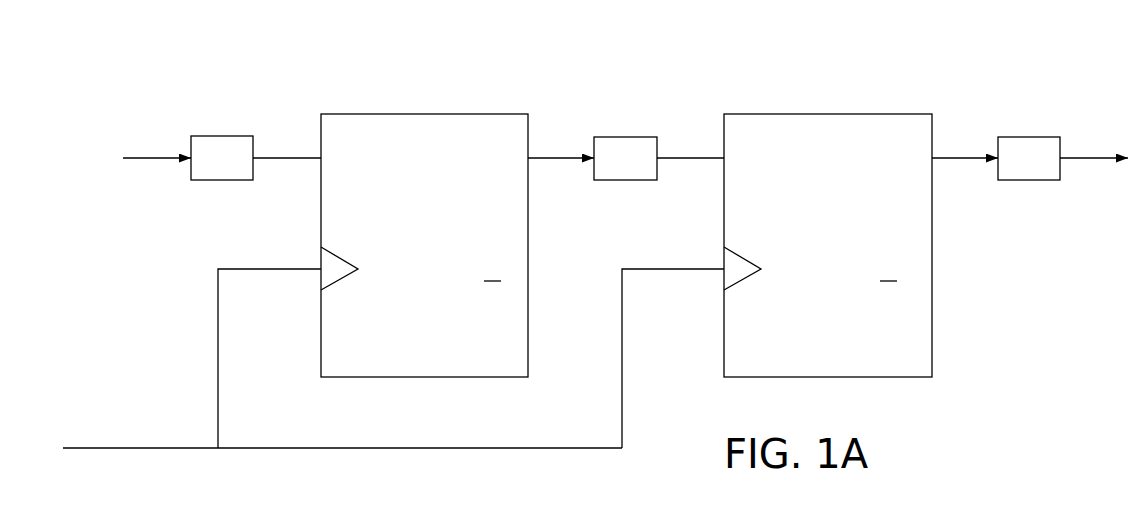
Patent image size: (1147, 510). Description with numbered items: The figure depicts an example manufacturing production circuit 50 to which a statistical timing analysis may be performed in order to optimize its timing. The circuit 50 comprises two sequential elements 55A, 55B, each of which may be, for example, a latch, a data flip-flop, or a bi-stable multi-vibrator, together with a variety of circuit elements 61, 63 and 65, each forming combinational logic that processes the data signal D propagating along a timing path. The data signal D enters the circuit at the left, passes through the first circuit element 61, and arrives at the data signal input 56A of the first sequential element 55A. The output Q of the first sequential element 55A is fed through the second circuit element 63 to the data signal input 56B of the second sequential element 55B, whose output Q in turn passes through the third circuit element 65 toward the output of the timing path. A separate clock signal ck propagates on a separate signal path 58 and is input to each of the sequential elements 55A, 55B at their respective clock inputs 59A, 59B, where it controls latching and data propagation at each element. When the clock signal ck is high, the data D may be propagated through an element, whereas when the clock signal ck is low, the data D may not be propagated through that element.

The circuit 50 is at (453, 40).
The circuit element 61 is at (210, 148).
The data signal input 56A is at (288, 157).
The sequential element 55A is at (388, 177).
The circuit element 63 is at (628, 135).
The data signal input 56B is at (697, 155).
The sequential element 55B is at (793, 177).
The circuit element 65 is at (1030, 135).
The signal path 58 is at (160, 450).
The clock input 59A is at (297, 268).
The clock input 59B is at (682, 272).